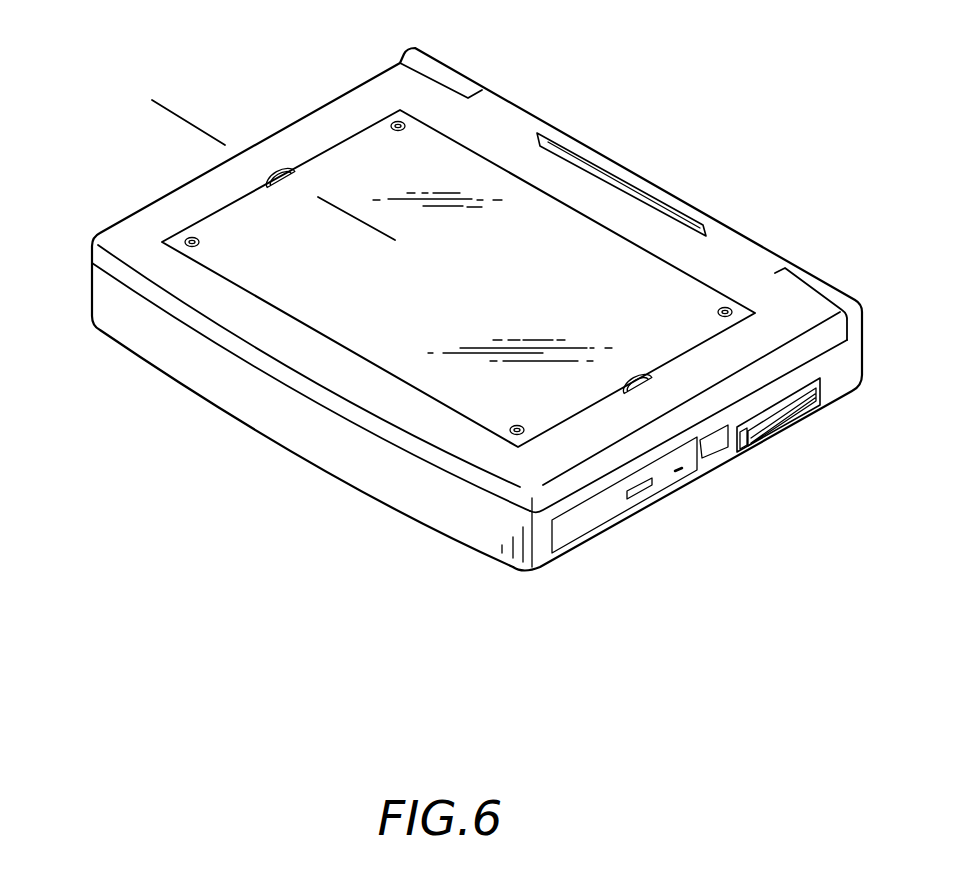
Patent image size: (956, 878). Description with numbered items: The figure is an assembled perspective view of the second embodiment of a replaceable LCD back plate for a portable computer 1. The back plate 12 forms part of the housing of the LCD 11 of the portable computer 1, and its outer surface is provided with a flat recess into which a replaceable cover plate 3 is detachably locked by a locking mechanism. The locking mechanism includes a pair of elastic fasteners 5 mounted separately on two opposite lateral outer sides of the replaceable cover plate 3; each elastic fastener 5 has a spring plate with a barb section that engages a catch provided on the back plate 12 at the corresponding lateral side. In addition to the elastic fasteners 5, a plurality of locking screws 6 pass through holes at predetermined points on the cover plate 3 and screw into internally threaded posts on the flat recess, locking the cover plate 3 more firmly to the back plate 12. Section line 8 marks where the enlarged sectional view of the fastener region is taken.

The portable computer 1 is at (333, 453).
The replaceable cover plate 3 is at (474, 173).
The elastic fastener 5 is at (277, 167).
The locking screw 6 is at (398, 122).
The section line 8- 8 is at (165, 111).
The LCD 11 is at (227, 343).
The back plate 12 is at (720, 255).